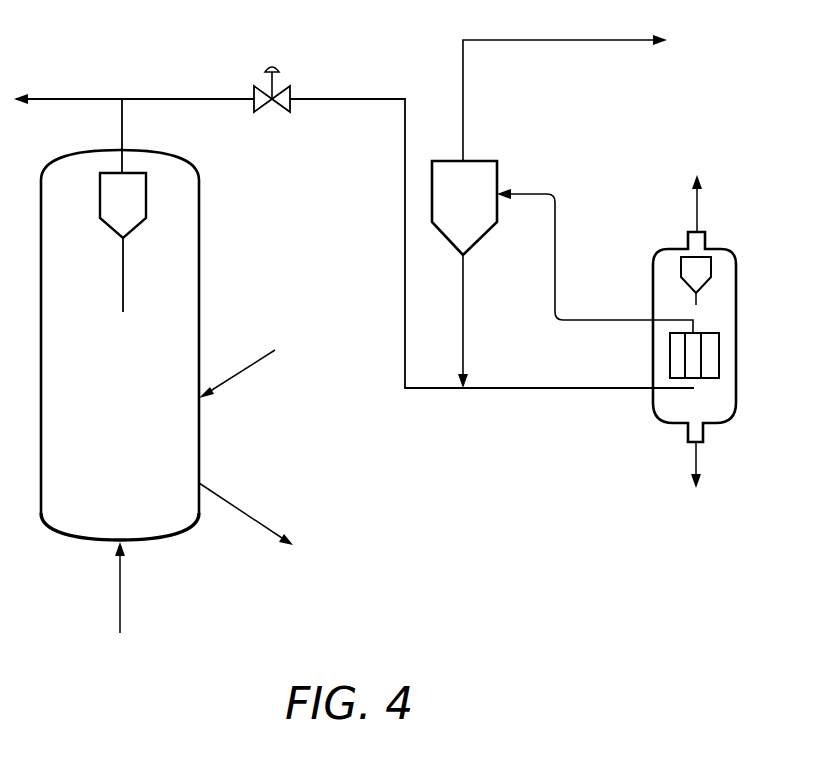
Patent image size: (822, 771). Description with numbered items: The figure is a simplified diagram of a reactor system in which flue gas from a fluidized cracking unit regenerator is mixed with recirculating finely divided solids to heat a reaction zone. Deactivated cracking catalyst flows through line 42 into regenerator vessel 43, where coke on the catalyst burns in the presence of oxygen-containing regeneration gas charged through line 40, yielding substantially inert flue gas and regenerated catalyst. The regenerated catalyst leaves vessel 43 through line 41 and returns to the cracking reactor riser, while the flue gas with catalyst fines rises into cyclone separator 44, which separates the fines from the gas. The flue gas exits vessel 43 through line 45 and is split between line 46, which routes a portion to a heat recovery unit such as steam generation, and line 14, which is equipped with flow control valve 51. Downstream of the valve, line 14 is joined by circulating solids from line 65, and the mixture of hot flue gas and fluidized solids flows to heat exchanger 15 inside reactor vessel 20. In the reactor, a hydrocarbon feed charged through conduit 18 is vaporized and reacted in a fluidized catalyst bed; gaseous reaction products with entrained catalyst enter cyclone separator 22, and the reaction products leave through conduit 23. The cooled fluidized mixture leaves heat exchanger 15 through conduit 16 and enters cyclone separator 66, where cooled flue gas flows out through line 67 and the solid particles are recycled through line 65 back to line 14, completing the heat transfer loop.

The line 14 is at (190, 99).
The heat exchanger 15 is at (709, 332).
The conduit 16 is at (590, 322).
The conduit 18 is at (697, 458).
The reactor vessel 20 is at (740, 375).
The cyclone separator 22 is at (694, 272).
The conduit 23 is at (697, 203).
The line 40 is at (122, 592).
The line 41 is at (237, 507).
The line 42 is at (240, 376).
The regenerator vessel 43 is at (200, 249).
The cyclone separator 44 is at (138, 210).
The line 45 is at (125, 130).
The line 46 is at (72, 99).
The flow control valve 51 is at (273, 65).
The line 65 is at (464, 310).
The cyclone separator 66 is at (479, 205).
The line 67 is at (465, 92).